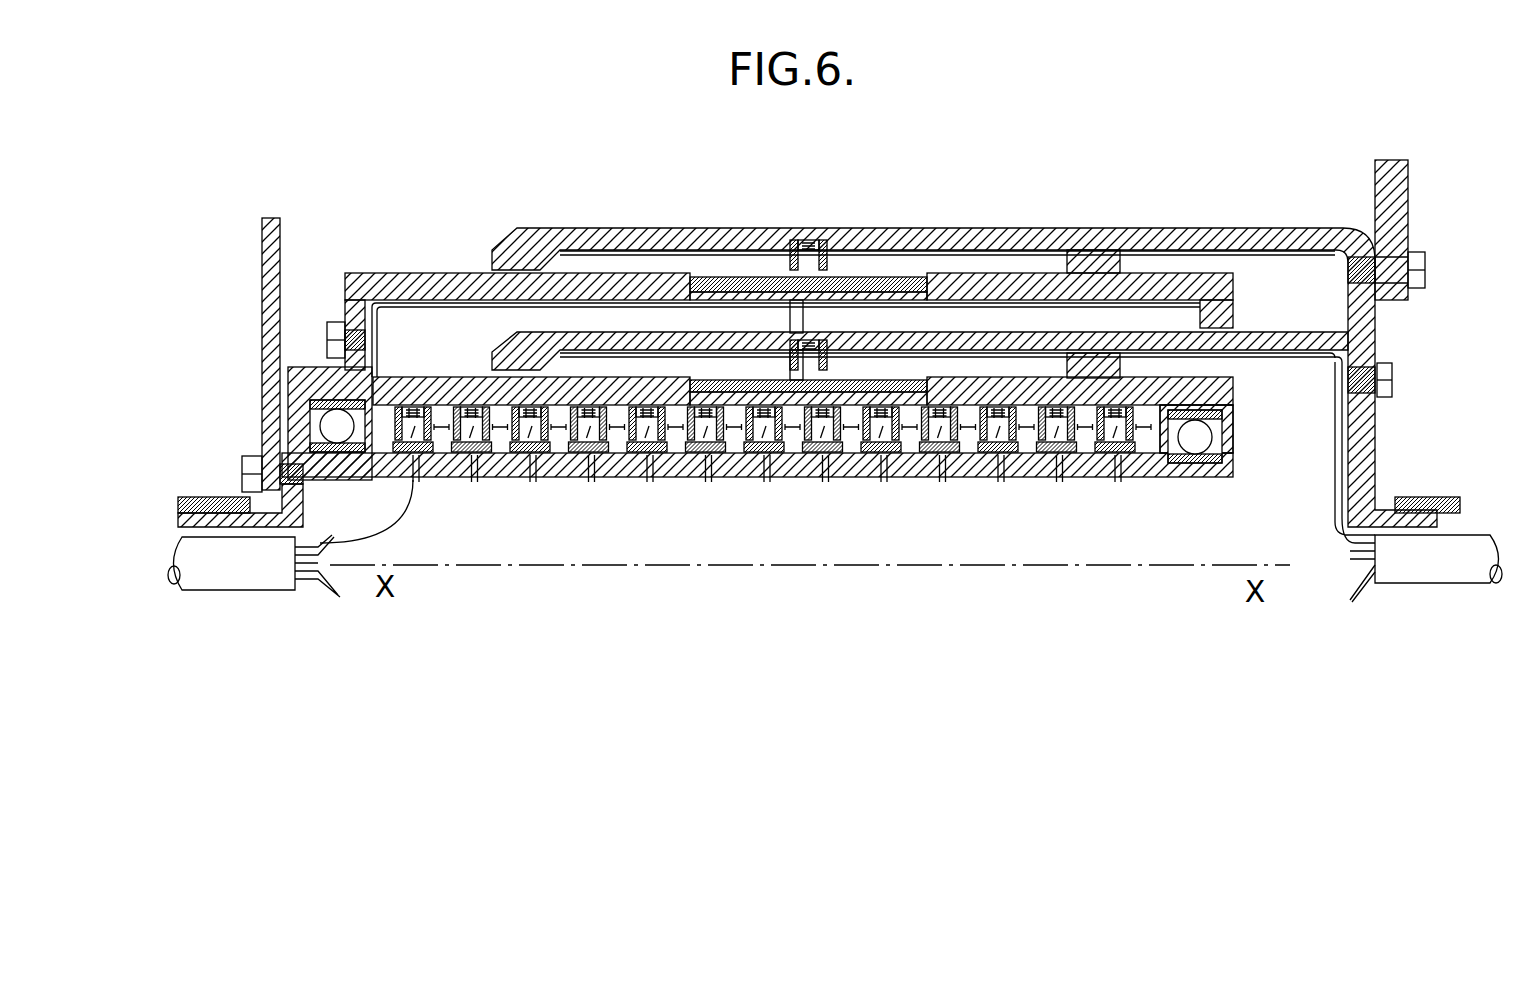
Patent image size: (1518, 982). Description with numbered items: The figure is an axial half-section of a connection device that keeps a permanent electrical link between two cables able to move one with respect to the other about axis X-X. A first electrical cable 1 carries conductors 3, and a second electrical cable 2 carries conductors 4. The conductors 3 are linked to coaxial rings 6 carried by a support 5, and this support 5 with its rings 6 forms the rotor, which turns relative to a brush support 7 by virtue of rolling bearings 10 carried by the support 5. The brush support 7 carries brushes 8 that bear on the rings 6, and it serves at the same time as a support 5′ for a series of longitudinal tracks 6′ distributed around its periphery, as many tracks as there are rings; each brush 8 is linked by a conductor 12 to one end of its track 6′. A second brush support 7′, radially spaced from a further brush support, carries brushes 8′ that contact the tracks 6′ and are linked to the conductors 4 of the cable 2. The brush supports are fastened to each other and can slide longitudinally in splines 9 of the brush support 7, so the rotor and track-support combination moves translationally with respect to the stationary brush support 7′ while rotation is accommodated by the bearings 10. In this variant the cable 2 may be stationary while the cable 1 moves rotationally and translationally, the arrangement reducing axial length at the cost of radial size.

The electrical cable 1 is at (223, 573).
The electrical cable 2 is at (1428, 568).
The conductors 3 is at (303, 552).
The conductors 4 is at (1348, 549).
The support 5 is at (548, 468).
The support 5′ is at (1196, 429).
The coaxial rings 6 is at (413, 432).
The longitudinal tracks 6′ is at (910, 393).
The brush support 7 is at (1225, 392).
The brush support 7′ is at (1043, 343).
The brushes 8 is at (493, 378).
The brushes 8′ is at (797, 333).
The splines 9 is at (445, 375).
The rolling bearings 10 is at (295, 432).
The conductors 12 is at (402, 310).